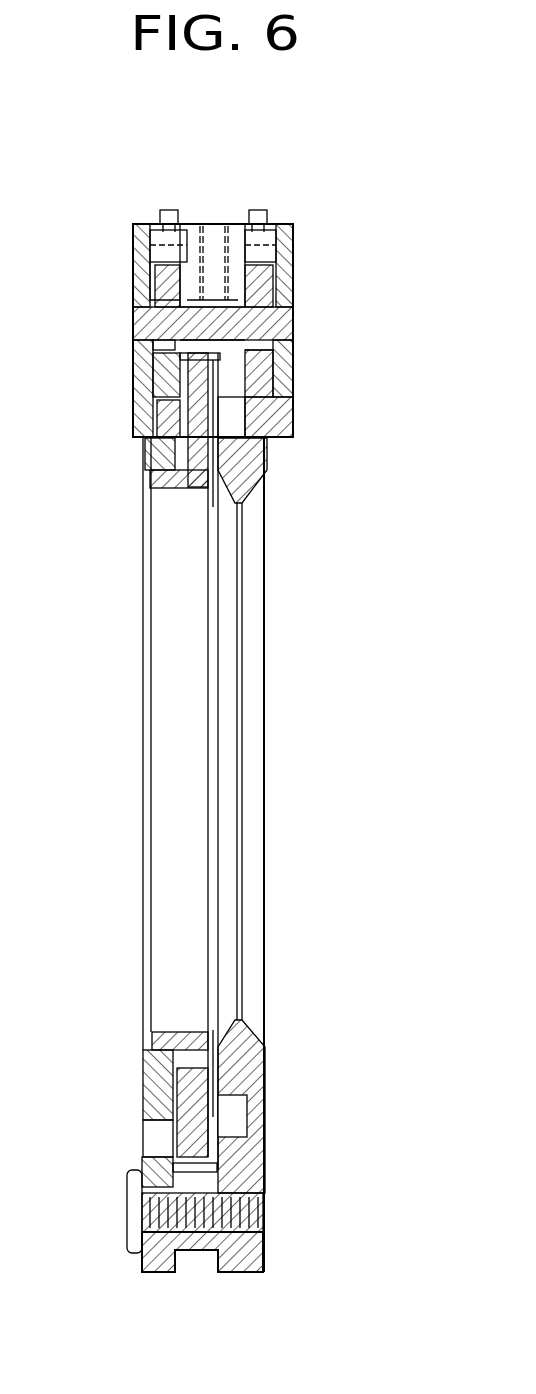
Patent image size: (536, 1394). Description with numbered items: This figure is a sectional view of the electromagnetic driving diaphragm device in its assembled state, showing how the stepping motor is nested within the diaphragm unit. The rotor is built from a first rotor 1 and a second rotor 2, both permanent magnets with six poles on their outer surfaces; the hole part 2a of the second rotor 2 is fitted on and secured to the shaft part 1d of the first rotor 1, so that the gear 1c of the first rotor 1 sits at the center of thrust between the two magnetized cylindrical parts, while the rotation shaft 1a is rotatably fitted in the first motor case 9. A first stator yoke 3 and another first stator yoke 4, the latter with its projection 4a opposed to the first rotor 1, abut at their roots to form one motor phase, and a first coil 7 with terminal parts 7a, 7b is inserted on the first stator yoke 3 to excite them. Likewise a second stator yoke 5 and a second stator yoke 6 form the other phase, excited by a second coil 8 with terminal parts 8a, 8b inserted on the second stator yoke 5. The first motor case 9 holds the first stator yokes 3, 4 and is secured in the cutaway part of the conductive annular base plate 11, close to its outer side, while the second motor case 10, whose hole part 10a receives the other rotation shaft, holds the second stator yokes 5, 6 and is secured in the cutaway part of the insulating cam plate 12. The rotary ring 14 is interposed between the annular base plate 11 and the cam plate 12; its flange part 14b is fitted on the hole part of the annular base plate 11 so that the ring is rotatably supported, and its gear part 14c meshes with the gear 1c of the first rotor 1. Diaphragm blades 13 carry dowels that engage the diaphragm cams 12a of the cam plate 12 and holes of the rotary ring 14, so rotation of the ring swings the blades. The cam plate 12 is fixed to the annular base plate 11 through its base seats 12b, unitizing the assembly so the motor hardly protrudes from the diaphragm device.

The first rotor 1 is at (170, 357).
The rotation shaft 1a is at (142, 330).
The gear 1c is at (232, 348).
The shaft part 1d is at (315, 286).
The second rotor 2 is at (275, 380).
The hole part 2a is at (270, 305).
The first stator yoke 3 is at (133, 232).
The first stator yoke 4 is at (170, 412).
The projection 4a is at (147, 312).
The second stator yoke 5 is at (268, 243).
The second stator yoke 6 is at (268, 425).
The first coil 7 is at (205, 225).
The terminal part 7a is at (150, 172).
The terminal part 7b is at (170, 212).
The second coil 8 is at (222, 228).
The terminal part 8a is at (274, 172).
The terminal part 8b is at (258, 212).
The first motor case 9 is at (142, 385).
The second motor case 10 is at (285, 412).
The hole part 10a is at (292, 355).
The annular base plate 11 is at (148, 457).
The cam plate 12 is at (257, 618).
The diaphragm cam 12a is at (248, 1115).
The base seat 12b is at (190, 1245).
The diaphragm blade 13 is at (258, 468).
The rotary ring 14 is at (162, 663).
The flange part 14b is at (165, 493).
The gear part 14c is at (215, 372).